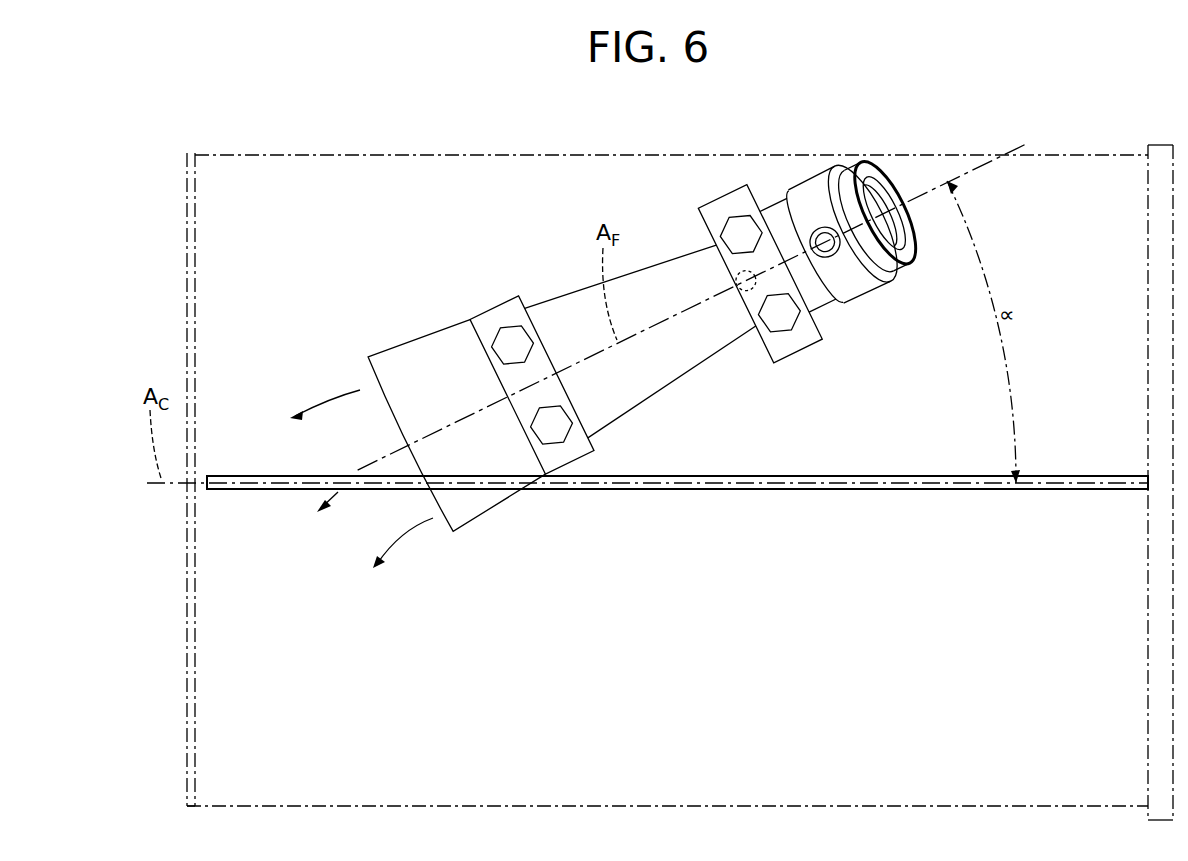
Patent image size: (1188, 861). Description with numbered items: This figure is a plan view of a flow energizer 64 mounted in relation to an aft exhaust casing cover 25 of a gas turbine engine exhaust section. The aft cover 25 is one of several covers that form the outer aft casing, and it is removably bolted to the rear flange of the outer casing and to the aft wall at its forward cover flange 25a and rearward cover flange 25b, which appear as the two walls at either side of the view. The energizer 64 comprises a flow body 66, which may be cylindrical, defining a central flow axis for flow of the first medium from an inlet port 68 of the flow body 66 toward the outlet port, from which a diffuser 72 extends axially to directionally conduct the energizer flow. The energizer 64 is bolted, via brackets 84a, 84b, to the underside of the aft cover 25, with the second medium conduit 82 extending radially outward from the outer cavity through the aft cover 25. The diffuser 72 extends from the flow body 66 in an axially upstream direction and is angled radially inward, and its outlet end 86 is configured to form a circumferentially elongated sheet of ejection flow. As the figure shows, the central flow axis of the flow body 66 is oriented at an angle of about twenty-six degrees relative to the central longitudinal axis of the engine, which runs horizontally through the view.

The aft exhaust casing cover 25 is at (460, 198).
The forward cover flange 25a is at (196, 227).
The rearward cover flange 25b is at (1148, 226).
The flow energizer 64 is at (670, 250).
The flow body 66 is at (812, 185).
The inlet port 68 is at (882, 188).
The diffuser 72 is at (412, 340).
The second medium conduit 82 is at (863, 297).
The bracket 84a is at (573, 453).
The bracket 84b is at (798, 343).
The outlet end 86 is at (453, 532).